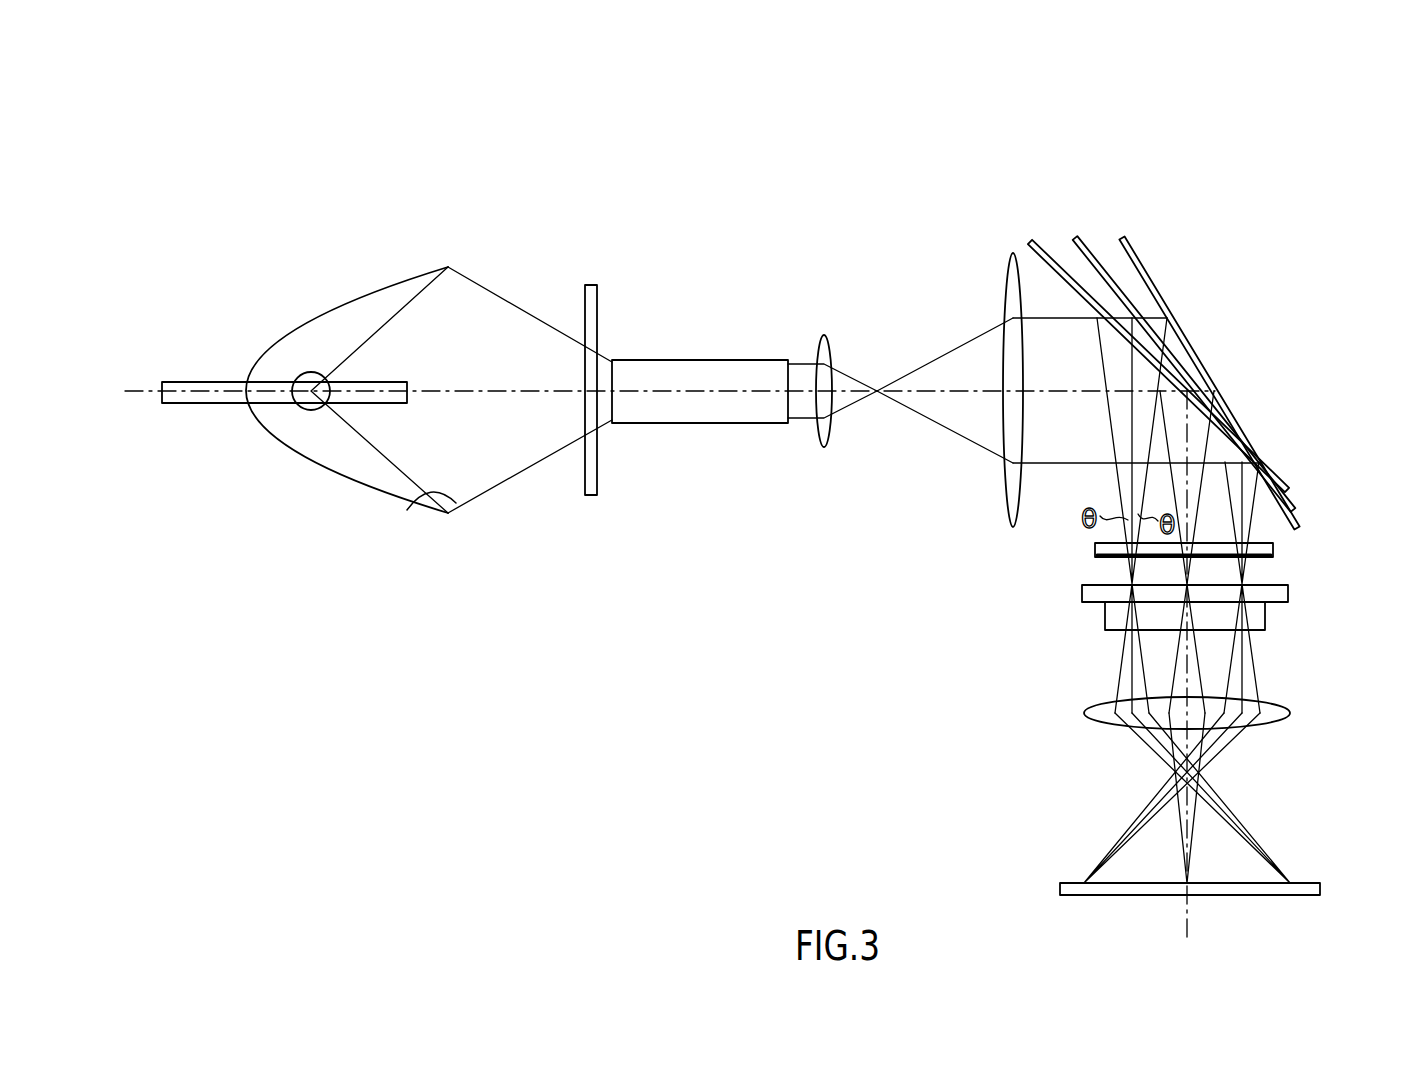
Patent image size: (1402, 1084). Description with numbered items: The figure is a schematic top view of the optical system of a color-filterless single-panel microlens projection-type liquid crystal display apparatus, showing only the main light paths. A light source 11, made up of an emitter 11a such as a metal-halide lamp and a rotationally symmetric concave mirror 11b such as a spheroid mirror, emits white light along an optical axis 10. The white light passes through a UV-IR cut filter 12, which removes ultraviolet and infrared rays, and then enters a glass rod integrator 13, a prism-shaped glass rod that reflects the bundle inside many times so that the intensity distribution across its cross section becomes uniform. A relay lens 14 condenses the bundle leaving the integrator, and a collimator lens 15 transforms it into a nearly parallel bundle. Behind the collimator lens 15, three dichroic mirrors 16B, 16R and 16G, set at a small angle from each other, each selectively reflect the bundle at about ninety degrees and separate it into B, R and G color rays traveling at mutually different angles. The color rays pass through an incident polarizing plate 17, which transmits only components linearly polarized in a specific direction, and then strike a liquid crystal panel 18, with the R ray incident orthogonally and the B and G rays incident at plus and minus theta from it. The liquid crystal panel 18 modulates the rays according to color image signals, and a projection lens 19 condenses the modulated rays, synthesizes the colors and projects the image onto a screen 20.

The optical axis 10 is at (128, 393).
The light source 11 is at (369, 283).
The emitter 11a is at (313, 410).
The concave mirror 11b is at (456, 503).
The UV-IR cut filter 12 is at (592, 285).
The glass rod integrator 13 is at (700, 423).
The relay lens 14 is at (825, 335).
The collimator lens 15 is at (1013, 252).
The dichroic mirror 16B is at (1113, 275).
The dichroic mirror 16R is at (1133, 302).
The dichroic mirror 16G is at (1205, 355).
The incident polarizing plate 17 is at (1097, 550).
The liquid crystal panel 18 is at (1083, 598).
The projection lens 19 is at (1087, 716).
The screen 20 is at (1066, 884).